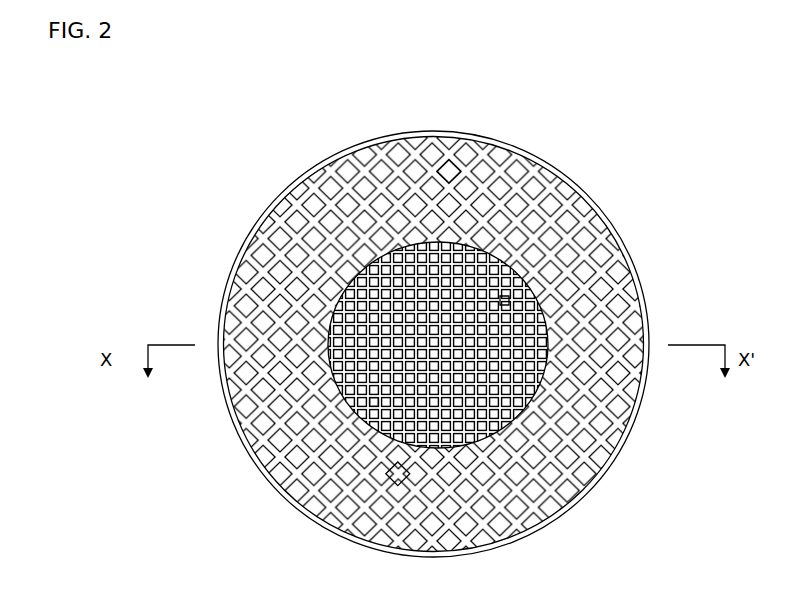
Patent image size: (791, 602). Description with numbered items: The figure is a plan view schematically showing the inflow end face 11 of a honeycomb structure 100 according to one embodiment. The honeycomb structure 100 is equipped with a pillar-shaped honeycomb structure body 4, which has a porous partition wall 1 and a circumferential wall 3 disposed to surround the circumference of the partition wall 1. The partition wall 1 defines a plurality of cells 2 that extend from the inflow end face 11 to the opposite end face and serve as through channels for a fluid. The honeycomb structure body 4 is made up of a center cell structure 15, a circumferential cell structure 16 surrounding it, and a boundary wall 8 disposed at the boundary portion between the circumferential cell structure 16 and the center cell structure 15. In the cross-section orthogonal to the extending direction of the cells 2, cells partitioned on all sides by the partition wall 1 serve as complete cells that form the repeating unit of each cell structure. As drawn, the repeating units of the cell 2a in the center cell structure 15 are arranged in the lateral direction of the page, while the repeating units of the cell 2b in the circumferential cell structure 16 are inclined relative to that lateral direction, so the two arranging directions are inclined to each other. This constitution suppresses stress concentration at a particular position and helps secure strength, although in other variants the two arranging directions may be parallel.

The honeycomb structure 100 is at (750, 42).
The partition wall 1 is at (456, 178).
The cells 2 is at (383, 165).
The cell 2a is at (438, 345).
The cell 2b is at (434, 344).
The circumferential wall 3 is at (616, 231).
The honeycomb structure body 4 is at (648, 403).
The boundary wall 8 is at (548, 337).
The inflow end face 11 is at (279, 183).
The center cell structure 15 is at (365, 403).
The circumferential cell structure 16 is at (380, 484).